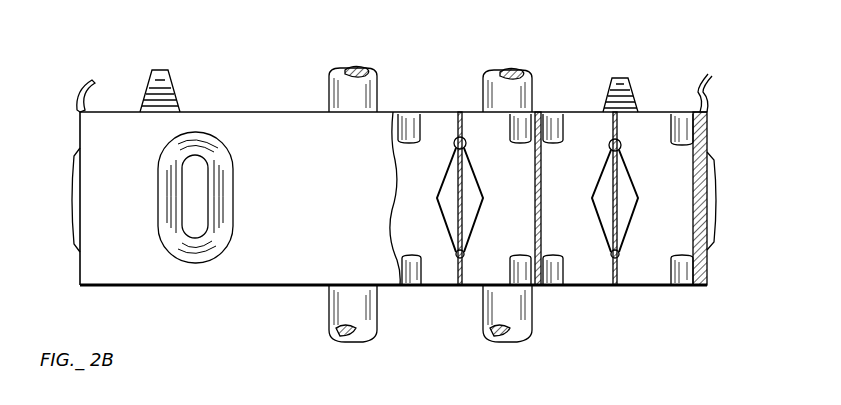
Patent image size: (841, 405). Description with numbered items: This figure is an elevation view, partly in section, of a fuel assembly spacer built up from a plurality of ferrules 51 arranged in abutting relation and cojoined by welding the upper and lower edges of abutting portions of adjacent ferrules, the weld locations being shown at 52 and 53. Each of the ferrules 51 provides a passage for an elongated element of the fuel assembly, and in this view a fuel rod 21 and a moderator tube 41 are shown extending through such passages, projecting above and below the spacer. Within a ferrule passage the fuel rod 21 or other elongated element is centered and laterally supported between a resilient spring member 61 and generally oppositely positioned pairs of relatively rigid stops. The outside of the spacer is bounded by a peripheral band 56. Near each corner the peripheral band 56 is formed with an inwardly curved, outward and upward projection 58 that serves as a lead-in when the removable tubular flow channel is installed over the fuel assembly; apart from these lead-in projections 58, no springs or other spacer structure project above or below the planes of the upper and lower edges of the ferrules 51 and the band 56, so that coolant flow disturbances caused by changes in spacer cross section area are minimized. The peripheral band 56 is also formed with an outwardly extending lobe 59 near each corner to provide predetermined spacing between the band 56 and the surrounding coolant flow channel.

The fuel rod 21 is at (512, 72).
The moderator tube 41 is at (362, 68).
The ferrule 51 is at (541, 113).
The upper weld of abutting ferrules 52 is at (548, 114).
The lower weld of abutting ferrules 53 is at (542, 287).
The peripheral band 56 is at (80, 264).
The lead-in projection 58 is at (704, 86).
The lobe 59 is at (186, 266).
The resilient spring member 61 is at (627, 222).